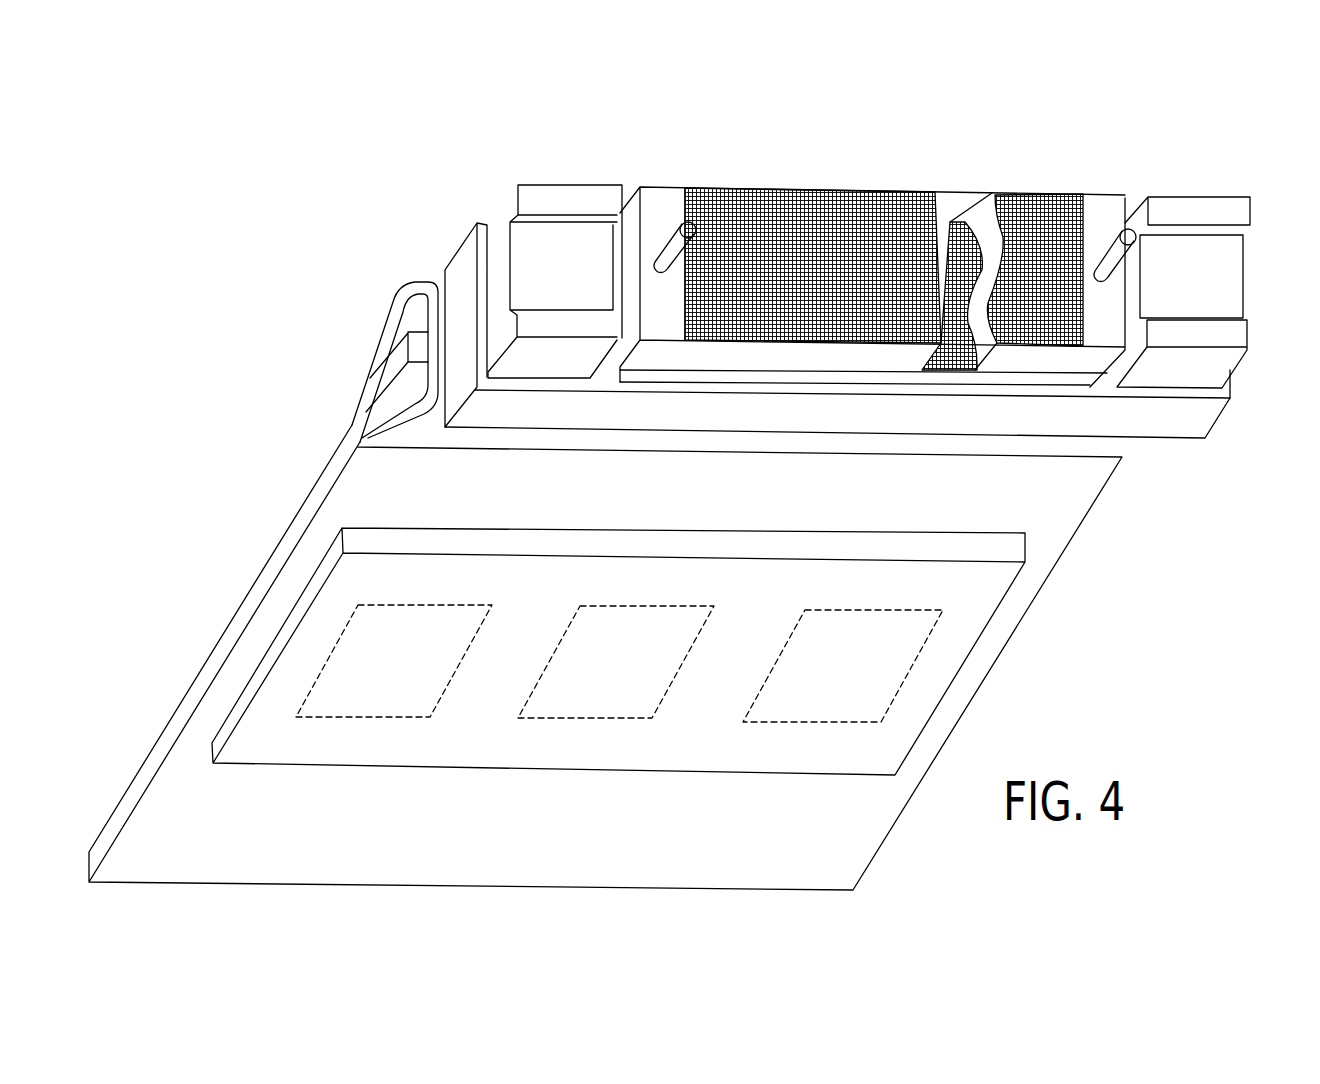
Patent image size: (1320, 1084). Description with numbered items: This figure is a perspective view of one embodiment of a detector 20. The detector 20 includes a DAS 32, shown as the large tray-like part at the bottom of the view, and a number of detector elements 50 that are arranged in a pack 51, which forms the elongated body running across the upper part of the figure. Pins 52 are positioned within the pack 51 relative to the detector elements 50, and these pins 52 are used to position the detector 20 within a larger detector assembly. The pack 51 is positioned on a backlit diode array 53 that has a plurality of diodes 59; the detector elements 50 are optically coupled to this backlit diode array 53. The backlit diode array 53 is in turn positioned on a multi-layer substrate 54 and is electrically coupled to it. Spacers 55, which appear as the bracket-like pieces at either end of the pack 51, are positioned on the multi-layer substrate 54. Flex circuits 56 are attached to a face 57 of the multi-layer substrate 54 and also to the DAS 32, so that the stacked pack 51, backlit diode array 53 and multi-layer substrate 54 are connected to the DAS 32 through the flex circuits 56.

The detector 20 is at (1140, 171).
The DAS 32 is at (1005, 625).
The detector elements 50 is at (775, 192).
The pack 51 is at (685, 168).
The pins 52 is at (668, 238).
The backlit diode array 53 is at (1090, 383).
The multi-layer substrate 54 is at (1207, 420).
The spacers 55 is at (560, 187).
The flex circuits 56 is at (374, 385).
The face 57 is at (445, 270).
The diodes 59 is at (963, 212).